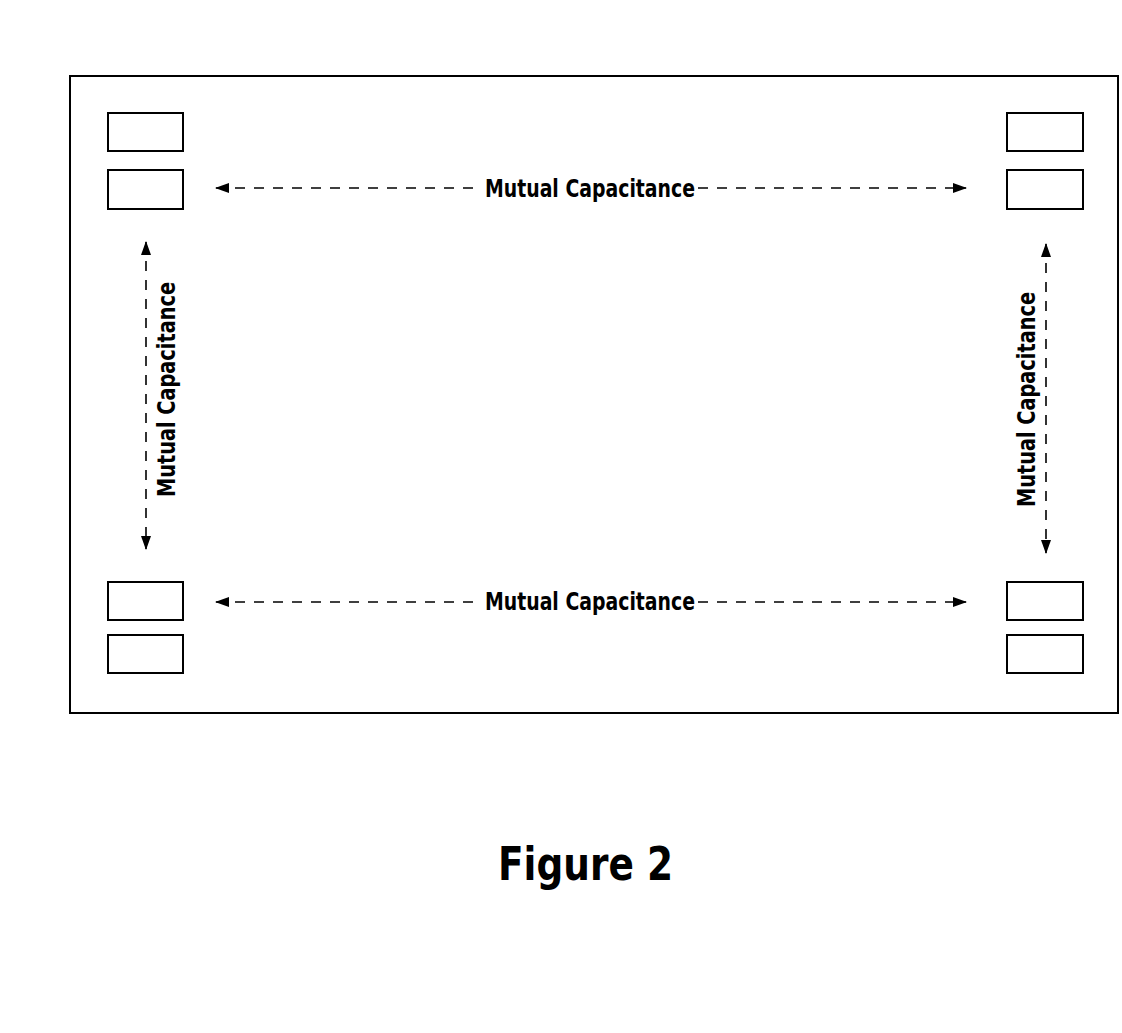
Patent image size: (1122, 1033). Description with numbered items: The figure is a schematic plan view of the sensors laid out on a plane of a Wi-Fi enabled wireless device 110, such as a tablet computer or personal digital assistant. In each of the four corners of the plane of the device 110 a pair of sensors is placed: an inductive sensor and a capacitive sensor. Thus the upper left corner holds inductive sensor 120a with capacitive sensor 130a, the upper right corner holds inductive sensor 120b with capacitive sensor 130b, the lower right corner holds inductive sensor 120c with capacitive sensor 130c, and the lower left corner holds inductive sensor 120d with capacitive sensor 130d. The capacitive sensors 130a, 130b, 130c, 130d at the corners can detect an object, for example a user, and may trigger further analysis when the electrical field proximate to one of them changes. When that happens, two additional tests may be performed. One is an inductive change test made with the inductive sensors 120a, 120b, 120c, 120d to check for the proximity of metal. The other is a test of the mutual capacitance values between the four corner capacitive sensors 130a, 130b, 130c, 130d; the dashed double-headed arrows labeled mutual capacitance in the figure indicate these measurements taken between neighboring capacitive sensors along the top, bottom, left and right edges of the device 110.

The wireless device 110 is at (653, 76).
The inductive sensor 120a is at (183, 130).
The inductive sensor 120b is at (1007, 130).
The inductive sensor 120c is at (1007, 651).
The inductive sensor 120d is at (183, 655).
The capacitive sensor 130a is at (183, 208).
The capacitive sensor 130b is at (1007, 211).
The capacitive sensor 130c is at (1007, 582).
The capacitive sensor 130d is at (183, 582).